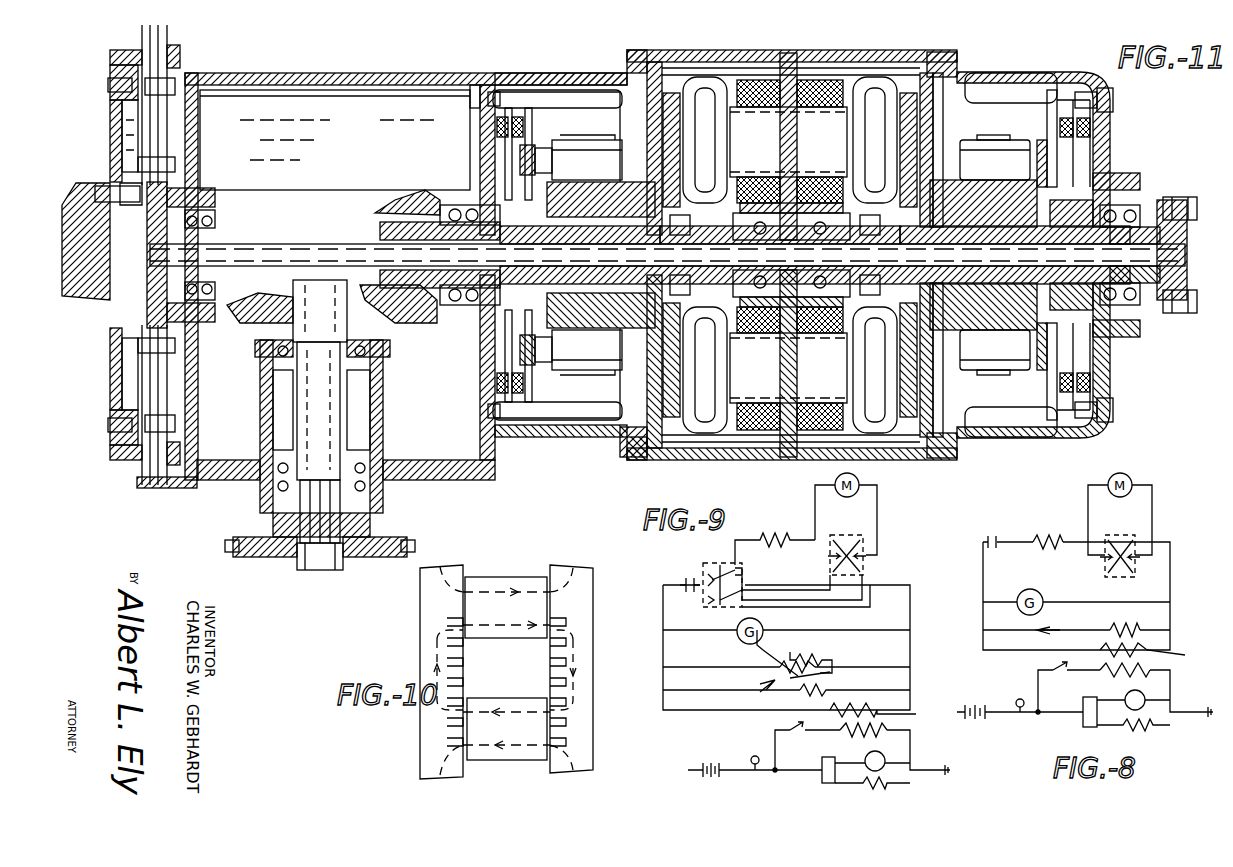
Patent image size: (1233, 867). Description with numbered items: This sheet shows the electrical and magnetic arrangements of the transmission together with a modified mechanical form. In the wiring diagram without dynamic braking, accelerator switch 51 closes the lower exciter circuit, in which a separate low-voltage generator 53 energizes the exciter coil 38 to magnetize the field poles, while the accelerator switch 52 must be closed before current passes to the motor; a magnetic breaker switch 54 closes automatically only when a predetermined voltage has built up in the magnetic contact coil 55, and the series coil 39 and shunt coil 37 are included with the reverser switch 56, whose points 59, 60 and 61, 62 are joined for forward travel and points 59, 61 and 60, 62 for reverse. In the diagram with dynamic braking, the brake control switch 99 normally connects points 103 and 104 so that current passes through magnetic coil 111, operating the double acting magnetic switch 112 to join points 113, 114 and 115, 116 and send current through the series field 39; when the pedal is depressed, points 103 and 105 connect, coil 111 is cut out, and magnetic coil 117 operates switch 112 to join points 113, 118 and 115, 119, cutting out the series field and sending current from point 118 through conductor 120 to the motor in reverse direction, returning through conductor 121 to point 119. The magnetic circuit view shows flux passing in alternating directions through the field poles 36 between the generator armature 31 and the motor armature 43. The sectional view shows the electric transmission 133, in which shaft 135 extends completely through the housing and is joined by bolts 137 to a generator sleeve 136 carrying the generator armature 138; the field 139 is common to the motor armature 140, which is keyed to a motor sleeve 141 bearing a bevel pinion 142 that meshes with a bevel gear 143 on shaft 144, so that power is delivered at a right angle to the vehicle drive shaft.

In FIG. 11, the electric transmission 133 is at (478, 72).
In FIG. 11, the shaft 135 is at (278, 250).
In FIG. 11, the generator sleeve 136 is at (1160, 205).
In FIG. 11, the bolts 137 is at (1185, 208).
In FIG. 11, the generator armature 138 is at (918, 226).
In FIG. 11, the field 139 is at (838, 125).
In FIG. 11, the motor armature 140 is at (660, 228).
In FIG. 11, the motor sleeve 141 is at (455, 228).
In FIG. 11, the bevel pinion 142 is at (422, 200).
In FIG. 11, the bevel gear 143 is at (398, 318).
In FIG. 11, the shaft 144 is at (318, 323).
In FIG. 10, the armature 31 is at (428, 728).
In FIG. 10, the field poles 36 is at (485, 585).
In FIG. 10, the armature 43 is at (578, 655).
In FIG. 9, the series coil 39 is at (777, 535).
In FIG. 8, the series coil 39 is at (1046, 536).
In FIG. 9, the magnetic breaker switch 54 is at (688, 583).
In FIG. 8, the magnetic breaker switch 54 is at (991, 535).
In FIG. 9, the reverser switch 56 is at (865, 555).
In FIG. 8, the reverser switch 56 is at (1108, 572).
In FIG. 9, the contact point 59 is at (840, 557).
In FIG. 8, the contact point 59 is at (1112, 550).
In FIG. 9, the contact point 62 is at (852, 550).
In FIG. 8, the contact point 62 is at (1135, 545).
In FIG. 9, the contact point 60 is at (830, 558).
In FIG. 8, the contact point 60 is at (1102, 558).
In FIG. 9, the contact point 61 is at (866, 560).
In FIG. 8, the contact point 61 is at (1140, 558).
In FIG. 9, the magnetic contact coil 55 is at (825, 690).
In FIG. 8, the magnetic contact coil 55 is at (1128, 630).
In FIG. 9, the accelerator switch 52 is at (770, 686).
In FIG. 8, the accelerator switch 52 is at (1048, 630).
In FIG. 9, the shunt coil 37 is at (884, 701).
In FIG. 8, the shunt coil 37 is at (1153, 656).
In FIG. 9, the accelerator switch 51 is at (798, 728).
In FIG. 8, the accelerator switch 51 is at (1062, 668).
In FIG. 9, the exciter coil 38 is at (858, 737).
In FIG. 8, the exciter coil 38 is at (1120, 674).
In FIG. 9, the generator 53 is at (886, 756).
In FIG. 8, the generator 53 is at (1146, 698).
In FIG. 9, the double acting magnetic switch 112 is at (712, 577).
In FIG. 9, the contact point 113 is at (708, 580).
In FIG. 9, the contact point 114 is at (715, 570).
In FIG. 9, the contact point 115 is at (742, 586).
In FIG. 9, the contact point 116 is at (742, 570).
In FIG. 9, the contact point 118 is at (710, 600).
In FIG. 9, the contact point 119 is at (730, 596).
In FIG. 9, the conductor 120 is at (805, 606).
In FIG. 9, the conductor 121 is at (826, 600).
In FIG. 9, the contact point 103 is at (774, 645).
In FIG. 9, the contact point 105 is at (810, 646).
In FIG. 9, the magnetic coil 117 is at (812, 660).
In FIG. 9, the brake control switch 99 is at (778, 662).
In FIG. 9, the contact point 104 is at (802, 675).
In FIG. 9, the magnetic coil 111 is at (835, 672).